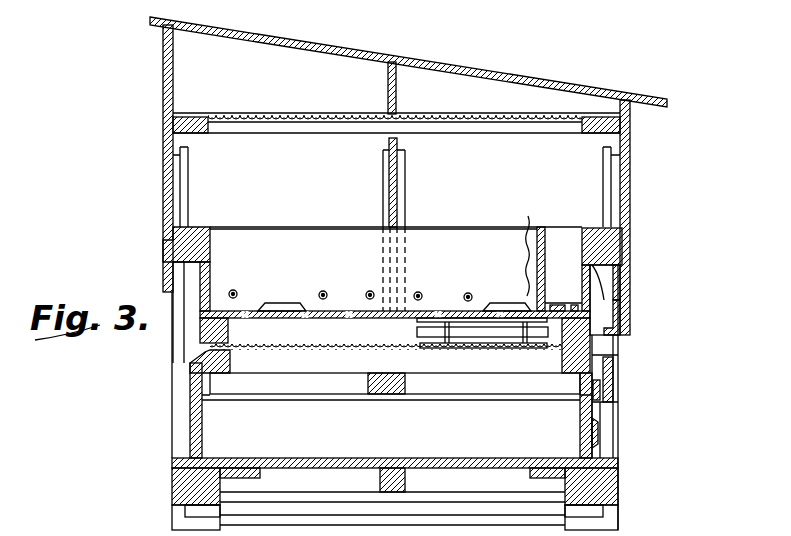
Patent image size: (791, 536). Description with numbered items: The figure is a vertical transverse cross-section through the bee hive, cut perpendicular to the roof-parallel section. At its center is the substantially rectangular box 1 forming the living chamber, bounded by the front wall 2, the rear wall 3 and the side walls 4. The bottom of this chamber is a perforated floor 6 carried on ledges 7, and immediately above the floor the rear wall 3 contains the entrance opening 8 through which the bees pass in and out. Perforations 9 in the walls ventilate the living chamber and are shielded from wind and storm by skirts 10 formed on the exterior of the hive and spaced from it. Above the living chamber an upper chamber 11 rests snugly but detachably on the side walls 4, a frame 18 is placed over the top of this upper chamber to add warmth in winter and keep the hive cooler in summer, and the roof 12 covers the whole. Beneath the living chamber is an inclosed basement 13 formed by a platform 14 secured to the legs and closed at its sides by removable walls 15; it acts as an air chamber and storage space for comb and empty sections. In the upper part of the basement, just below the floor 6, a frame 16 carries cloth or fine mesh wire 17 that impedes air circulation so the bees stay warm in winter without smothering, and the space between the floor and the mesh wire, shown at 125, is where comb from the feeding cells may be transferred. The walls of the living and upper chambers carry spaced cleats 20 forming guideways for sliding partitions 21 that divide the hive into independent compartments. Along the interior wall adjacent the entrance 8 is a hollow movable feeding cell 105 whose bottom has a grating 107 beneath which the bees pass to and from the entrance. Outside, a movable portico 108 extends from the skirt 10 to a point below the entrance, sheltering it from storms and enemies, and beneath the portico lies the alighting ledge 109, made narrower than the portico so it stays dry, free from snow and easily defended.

The rectangular box 1 is at (334, 266).
The front wall 2 is at (212, 292).
The rear wall 3 is at (581, 282).
The side walls 4 is at (436, 236).
The perforated floor 6 is at (460, 310).
The ledges 7 is at (230, 336).
The entrance opening 8 is at (276, 306).
The perforations 9 is at (207, 268).
The skirts 10 is at (163, 282).
The upper chamber 11 is at (300, 198).
The roof 12 is at (556, 86).
The basement 13 is at (397, 415).
The platform 14 is at (460, 464).
The removable walls 15 is at (203, 434).
The frame 16 is at (362, 371).
The cloth or fine mesh wire 17 is at (311, 355).
The frame 18 is at (197, 136).
The spaced cleats 20 is at (407, 192).
The sliding partitions 21 is at (386, 170).
The hollow movable cell 105 is at (536, 217).
The gratings 107 is at (551, 300).
The movable portico 108 is at (623, 318).
The alighting ledge 109 is at (615, 355).
The space between floor and mesh wire 125 is at (497, 336).